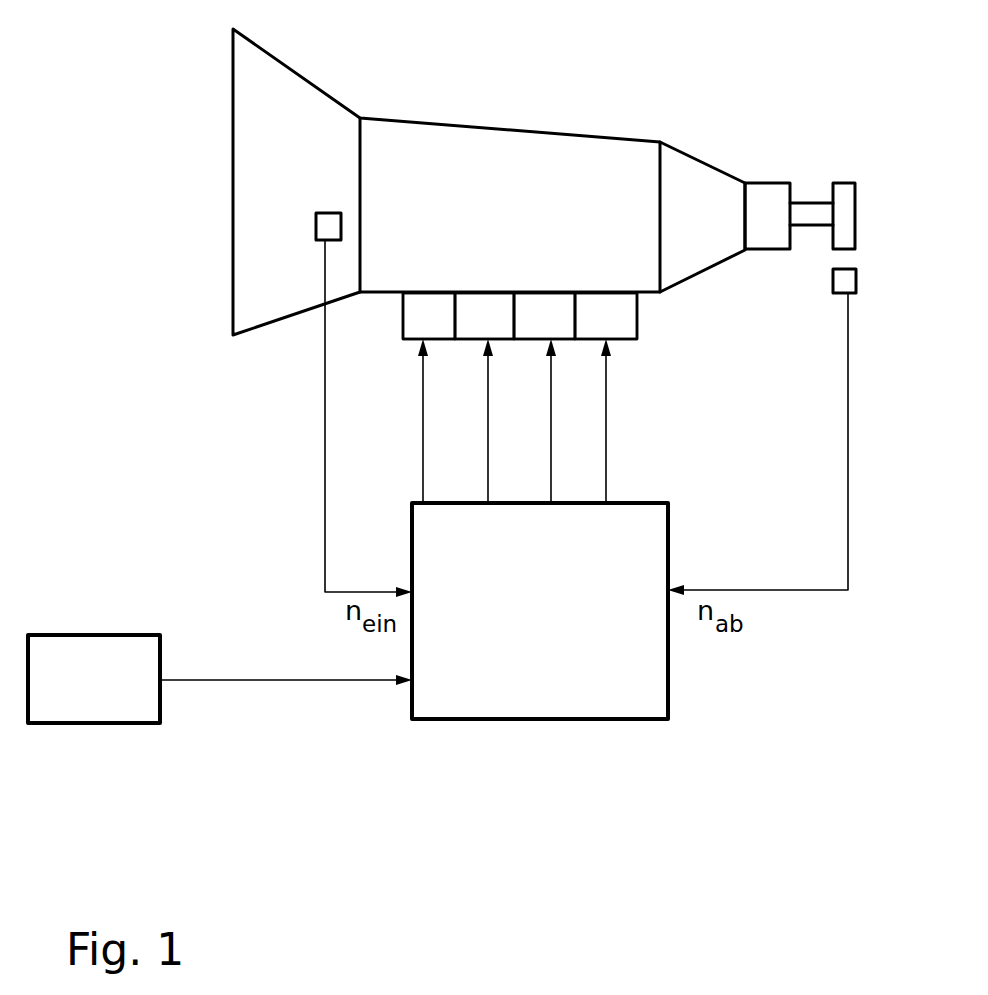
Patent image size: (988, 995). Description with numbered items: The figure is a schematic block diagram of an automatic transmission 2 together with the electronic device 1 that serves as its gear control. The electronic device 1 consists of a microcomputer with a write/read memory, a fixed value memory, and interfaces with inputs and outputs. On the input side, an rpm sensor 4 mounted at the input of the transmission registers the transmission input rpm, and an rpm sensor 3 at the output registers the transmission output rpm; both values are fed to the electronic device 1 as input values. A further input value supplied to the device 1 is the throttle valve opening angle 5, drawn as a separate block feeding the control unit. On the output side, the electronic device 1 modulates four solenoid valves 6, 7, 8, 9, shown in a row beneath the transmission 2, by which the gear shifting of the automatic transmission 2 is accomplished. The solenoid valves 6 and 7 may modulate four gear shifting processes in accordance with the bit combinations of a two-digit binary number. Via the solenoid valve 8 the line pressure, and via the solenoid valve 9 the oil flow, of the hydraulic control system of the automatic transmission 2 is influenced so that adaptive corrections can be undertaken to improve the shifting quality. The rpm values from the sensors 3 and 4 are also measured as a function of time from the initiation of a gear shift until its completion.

The electronic device 1 is at (526, 631).
The automatic transmission 2 is at (501, 203).
The rpm sensor 3 is at (856, 284).
The rpm sensor 4 is at (313, 232).
The throttle valve opening angle 5 is at (84, 685).
The solenoid valve 6 is at (437, 325).
The solenoid valve 7 is at (494, 325).
The solenoid valve 8 is at (556, 325).
The solenoid valve 9 is at (612, 325).